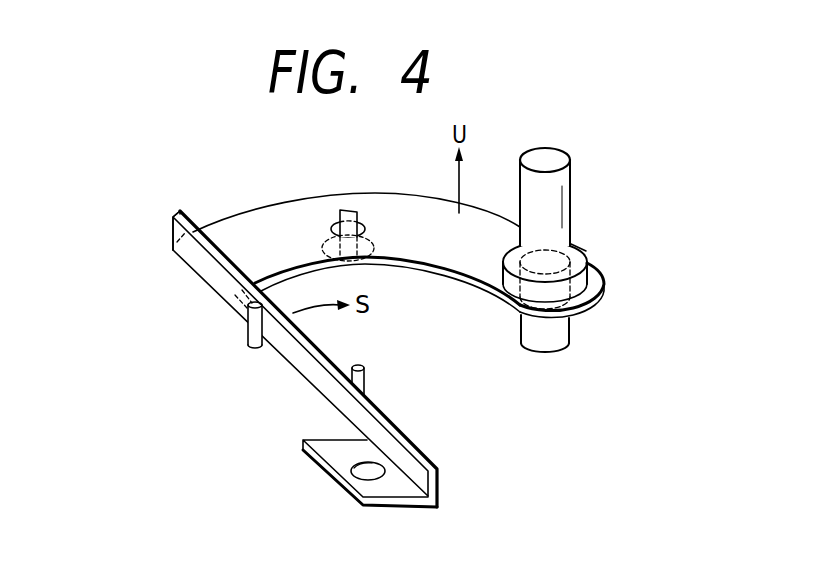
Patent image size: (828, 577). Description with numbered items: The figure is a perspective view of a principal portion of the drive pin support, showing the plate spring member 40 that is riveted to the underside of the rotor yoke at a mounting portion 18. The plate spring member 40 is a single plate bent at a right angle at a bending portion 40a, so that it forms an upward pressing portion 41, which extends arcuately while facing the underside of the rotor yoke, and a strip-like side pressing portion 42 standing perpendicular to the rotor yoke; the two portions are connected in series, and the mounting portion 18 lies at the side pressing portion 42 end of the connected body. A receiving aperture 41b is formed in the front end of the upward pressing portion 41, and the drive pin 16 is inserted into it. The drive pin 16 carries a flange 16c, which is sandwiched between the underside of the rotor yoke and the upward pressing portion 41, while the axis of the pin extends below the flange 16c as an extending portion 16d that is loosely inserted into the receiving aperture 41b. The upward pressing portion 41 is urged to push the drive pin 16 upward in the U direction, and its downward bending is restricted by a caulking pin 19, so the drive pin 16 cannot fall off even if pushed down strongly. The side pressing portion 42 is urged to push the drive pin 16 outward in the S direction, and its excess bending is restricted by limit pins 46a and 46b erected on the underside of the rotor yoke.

The drive pin 16 is at (553, 157).
The flange 16c is at (577, 248).
The extending portion 16d is at (541, 352).
The mounting portion 18 is at (358, 466).
The caulking pin 19 is at (356, 215).
The plate spring member 40 is at (263, 359).
The bending portion 40a is at (202, 278).
The upward pressing portion 41 is at (268, 223).
The receiving aperture 41b is at (601, 289).
The side pressing portion 42 is at (292, 358).
The limit pin 46a is at (247, 333).
The limit pin 46b is at (367, 374).